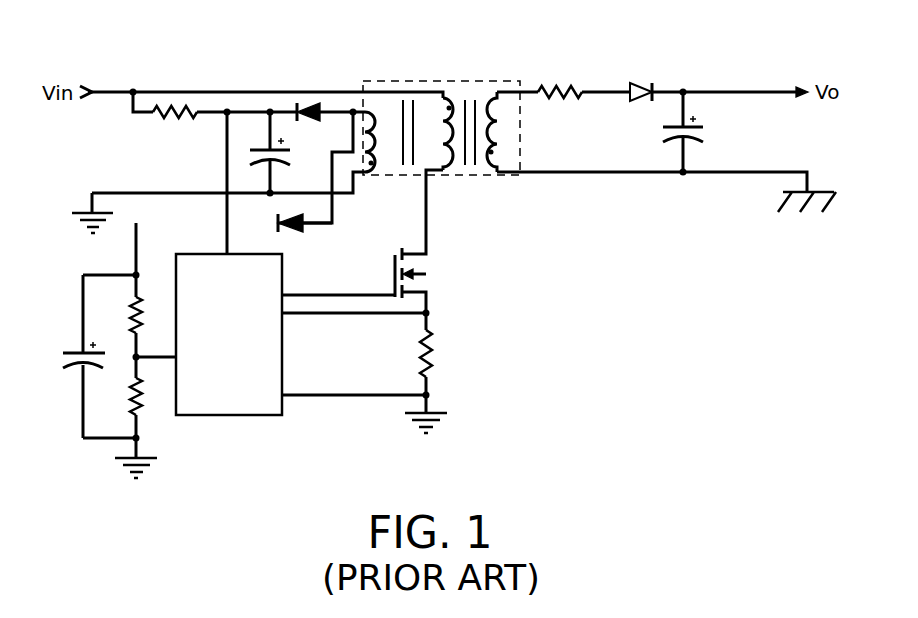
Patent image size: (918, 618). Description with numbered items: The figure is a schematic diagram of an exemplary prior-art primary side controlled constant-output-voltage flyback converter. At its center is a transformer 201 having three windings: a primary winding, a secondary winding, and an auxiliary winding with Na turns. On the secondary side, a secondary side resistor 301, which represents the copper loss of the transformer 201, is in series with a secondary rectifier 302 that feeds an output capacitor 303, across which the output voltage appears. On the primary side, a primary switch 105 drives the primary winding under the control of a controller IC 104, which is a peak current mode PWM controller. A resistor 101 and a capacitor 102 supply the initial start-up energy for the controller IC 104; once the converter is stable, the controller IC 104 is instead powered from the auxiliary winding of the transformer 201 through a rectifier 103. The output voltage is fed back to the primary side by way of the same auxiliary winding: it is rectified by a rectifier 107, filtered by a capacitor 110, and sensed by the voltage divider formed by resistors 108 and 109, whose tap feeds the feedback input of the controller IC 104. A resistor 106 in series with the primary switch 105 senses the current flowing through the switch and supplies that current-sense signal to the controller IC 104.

The resistor 101 is at (178, 120).
The capacitor 102 is at (283, 162).
The rectifier 103 is at (317, 120).
The controller IC 104 is at (246, 348).
The primary switch 105 is at (393, 272).
The resistor 106 is at (418, 365).
The rectifier 107 is at (305, 228).
The voltage divider resistor 108 is at (131, 322).
The voltage divider resistor 109 is at (131, 410).
The capacitor 110 is at (70, 352).
The transformer 201 is at (440, 80).
The secondary side resistor 301 is at (563, 88).
The secondary rectifier 302 is at (641, 88).
The output capacitor 303 is at (704, 138).